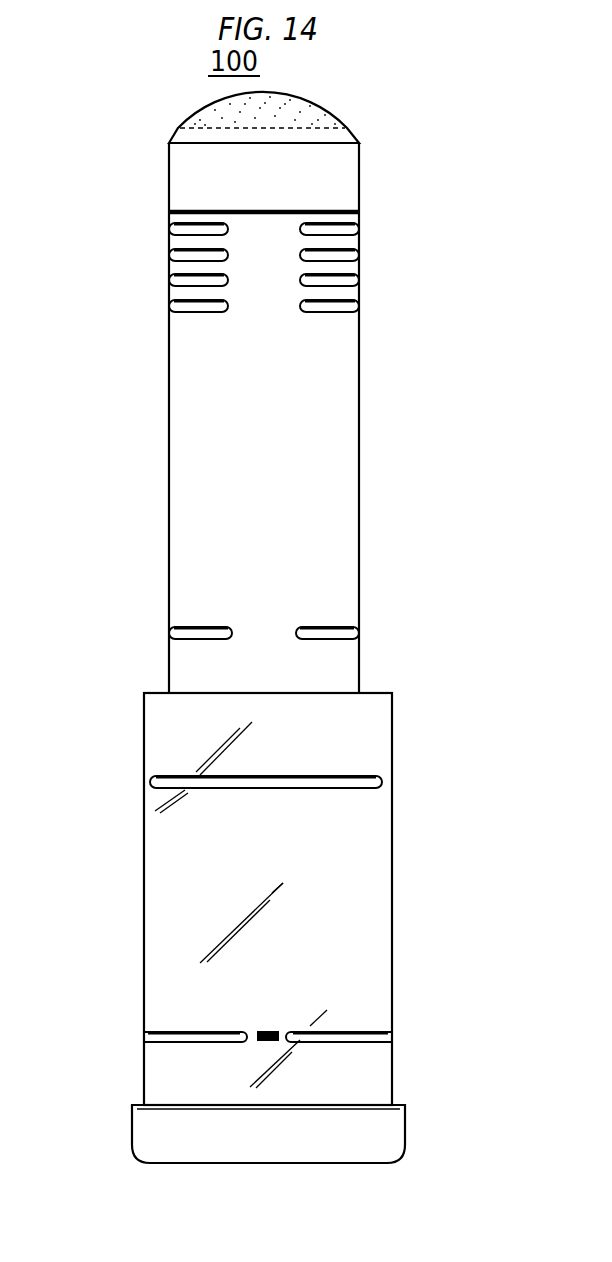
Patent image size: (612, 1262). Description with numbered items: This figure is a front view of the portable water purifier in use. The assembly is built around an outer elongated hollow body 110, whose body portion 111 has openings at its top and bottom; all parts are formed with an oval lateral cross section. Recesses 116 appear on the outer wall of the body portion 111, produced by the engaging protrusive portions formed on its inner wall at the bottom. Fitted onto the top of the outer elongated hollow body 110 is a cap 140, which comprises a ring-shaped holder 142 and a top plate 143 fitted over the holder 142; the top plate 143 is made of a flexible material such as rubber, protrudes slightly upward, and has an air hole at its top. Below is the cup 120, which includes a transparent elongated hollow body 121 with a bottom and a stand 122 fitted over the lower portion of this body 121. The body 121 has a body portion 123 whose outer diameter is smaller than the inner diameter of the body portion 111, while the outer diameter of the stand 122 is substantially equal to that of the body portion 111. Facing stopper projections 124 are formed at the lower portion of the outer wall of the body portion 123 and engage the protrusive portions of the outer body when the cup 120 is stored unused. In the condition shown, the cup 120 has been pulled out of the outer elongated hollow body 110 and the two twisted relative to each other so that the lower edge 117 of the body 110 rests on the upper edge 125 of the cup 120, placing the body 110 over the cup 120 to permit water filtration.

The outer elongated hollow body 110 is at (363, 393).
The body portion 111 is at (202, 458).
The recesses 116 is at (200, 632).
The lower edge 117 is at (338, 693).
The cup 120 is at (143, 870).
The transparent elongated hollow body 121 is at (367, 750).
The stand 122 is at (390, 1140).
The body portion 123 is at (392, 902).
The stopper projections 124 is at (267, 1027).
The upper edge 125 is at (190, 694).
The cap 140 is at (363, 175).
The ring-shaped holder 142 is at (205, 173).
The top plate 143 is at (298, 113).